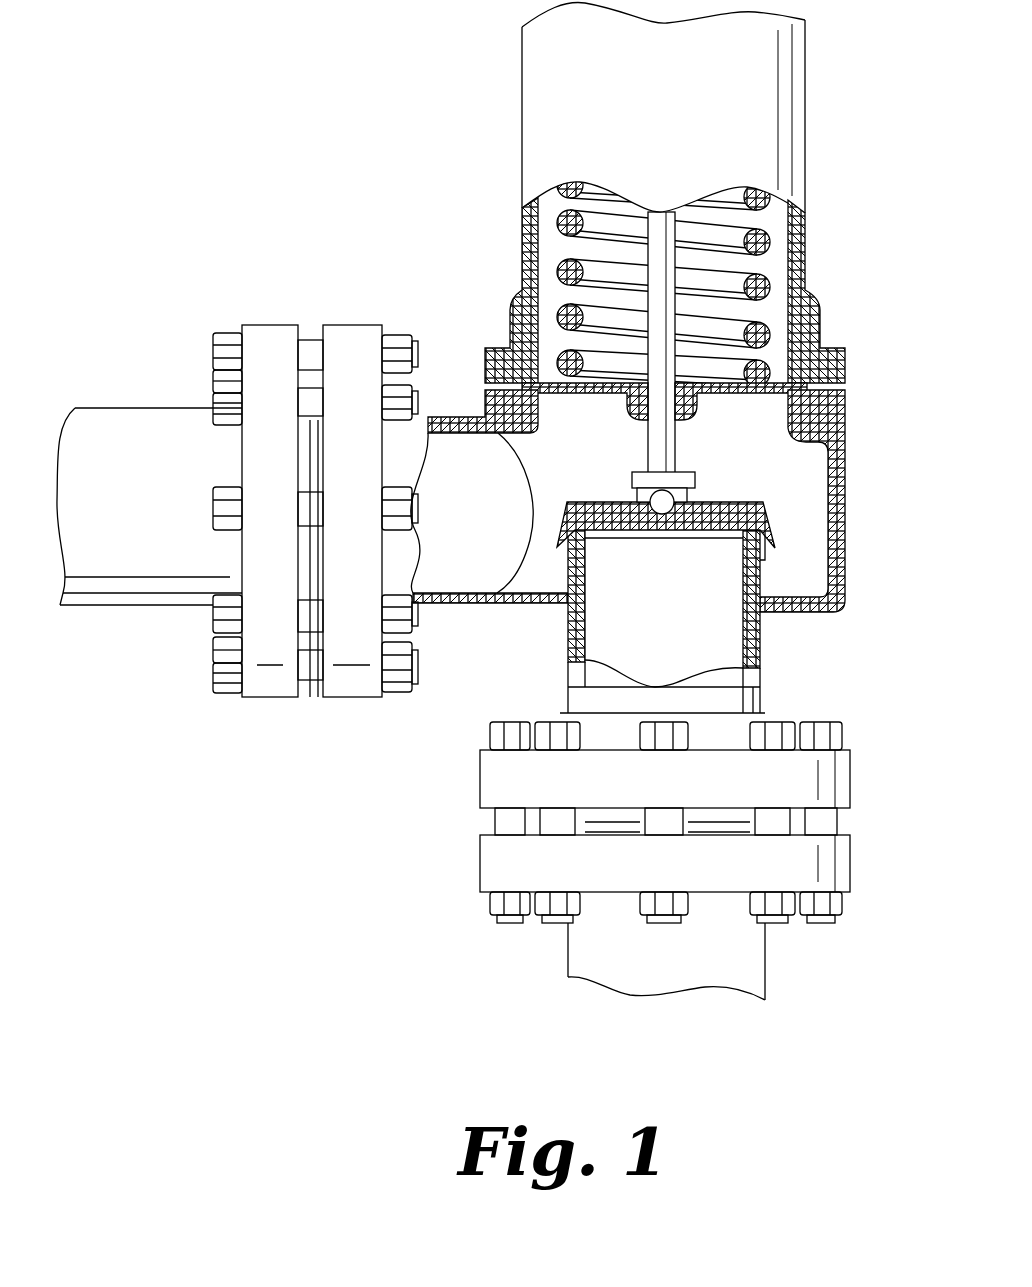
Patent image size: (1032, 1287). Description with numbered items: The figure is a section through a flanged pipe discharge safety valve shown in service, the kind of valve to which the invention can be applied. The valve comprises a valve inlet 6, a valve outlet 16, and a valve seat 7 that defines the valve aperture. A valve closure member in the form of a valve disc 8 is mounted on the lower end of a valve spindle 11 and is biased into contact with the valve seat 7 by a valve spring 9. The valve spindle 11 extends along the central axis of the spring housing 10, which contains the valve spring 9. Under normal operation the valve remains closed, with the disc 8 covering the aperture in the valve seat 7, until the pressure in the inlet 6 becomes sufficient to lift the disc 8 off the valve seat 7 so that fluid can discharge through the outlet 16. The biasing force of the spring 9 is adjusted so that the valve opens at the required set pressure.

The valve inlet 6 is at (692, 659).
The valve seat 7 is at (762, 549).
The valve disc 8 is at (721, 496).
The valve spring 9 is at (772, 282).
The spring housing 10 is at (518, 134).
The valve spindle 11 is at (658, 279).
The valve outlet 16 is at (453, 565).